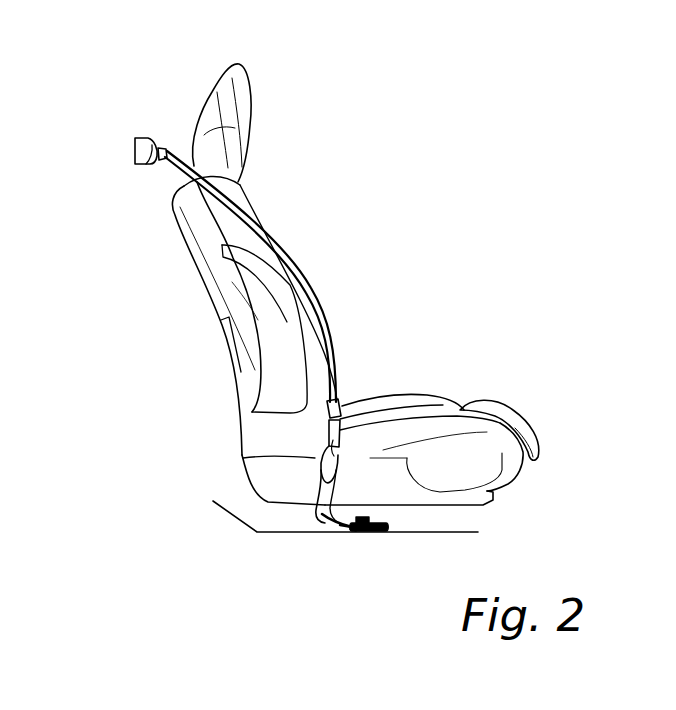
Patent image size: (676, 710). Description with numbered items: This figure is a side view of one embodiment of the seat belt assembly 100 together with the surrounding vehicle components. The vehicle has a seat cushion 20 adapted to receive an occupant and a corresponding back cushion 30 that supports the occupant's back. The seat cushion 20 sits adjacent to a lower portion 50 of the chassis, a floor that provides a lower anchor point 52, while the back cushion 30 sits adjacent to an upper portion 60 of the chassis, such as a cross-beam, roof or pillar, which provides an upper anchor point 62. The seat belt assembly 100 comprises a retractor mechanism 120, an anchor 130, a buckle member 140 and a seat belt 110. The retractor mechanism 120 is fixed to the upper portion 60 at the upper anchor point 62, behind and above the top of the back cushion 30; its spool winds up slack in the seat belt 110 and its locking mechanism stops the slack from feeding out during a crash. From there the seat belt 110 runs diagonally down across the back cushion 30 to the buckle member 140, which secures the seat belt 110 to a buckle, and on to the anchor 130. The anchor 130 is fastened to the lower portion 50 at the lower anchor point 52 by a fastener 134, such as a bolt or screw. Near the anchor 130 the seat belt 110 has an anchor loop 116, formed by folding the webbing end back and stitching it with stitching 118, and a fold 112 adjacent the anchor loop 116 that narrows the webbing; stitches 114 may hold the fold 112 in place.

The seat cushion 20 is at (461, 410).
The back cushion 30 is at (247, 330).
The lower portion of the chassis 50 is at (213, 501).
The lower anchor point 52 is at (378, 534).
The upper portion of the chassis 60 is at (136, 150).
The upper anchor point 62 is at (156, 160).
The seat belt assembly 100 is at (309, 166).
The seat belt 110 is at (297, 278).
The fold 112 is at (340, 440).
The stitches 114 is at (330, 462).
The anchor loop 116 is at (317, 477).
The stitching 118 is at (338, 446).
The retractor mechanism 120 is at (162, 150).
The anchor 130 is at (343, 524).
The fastener 134 is at (353, 534).
The buckle member 140 is at (340, 407).